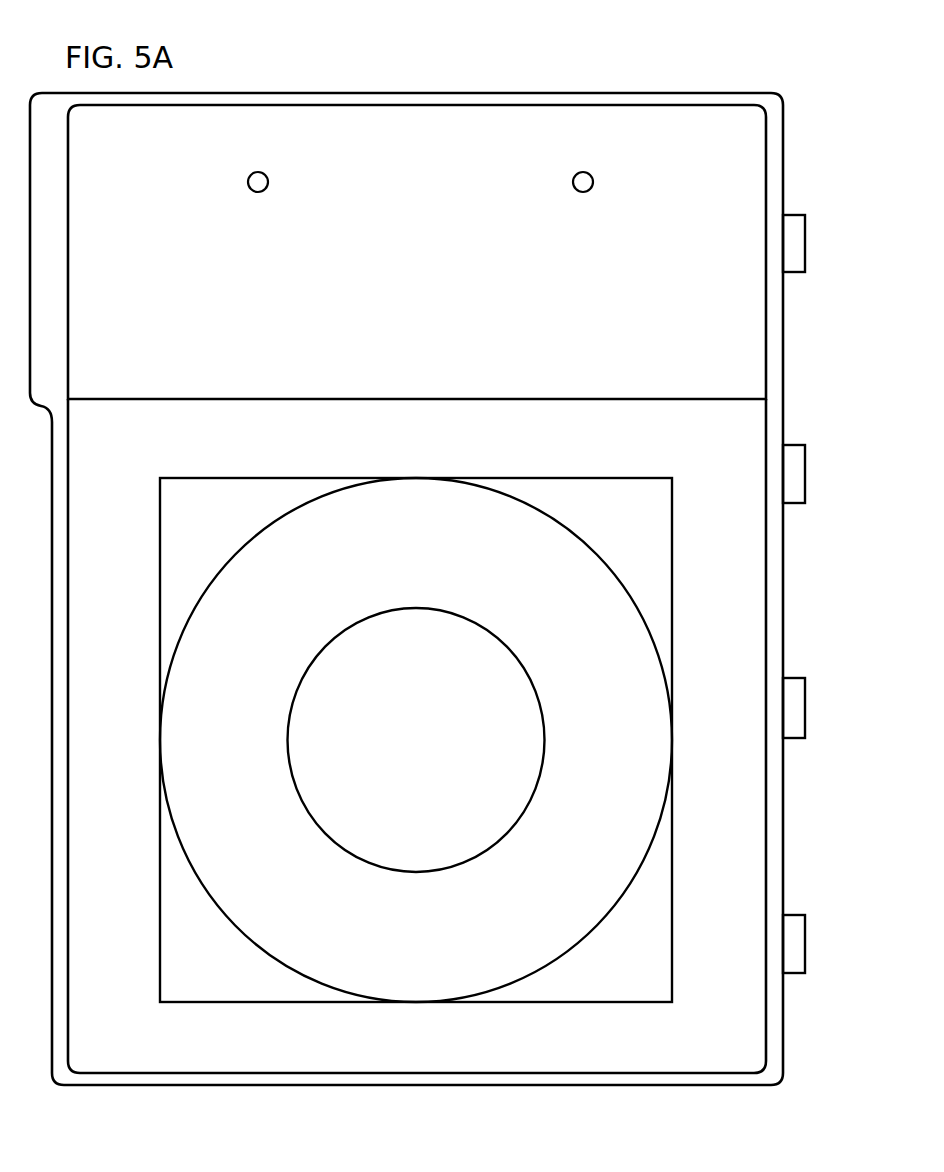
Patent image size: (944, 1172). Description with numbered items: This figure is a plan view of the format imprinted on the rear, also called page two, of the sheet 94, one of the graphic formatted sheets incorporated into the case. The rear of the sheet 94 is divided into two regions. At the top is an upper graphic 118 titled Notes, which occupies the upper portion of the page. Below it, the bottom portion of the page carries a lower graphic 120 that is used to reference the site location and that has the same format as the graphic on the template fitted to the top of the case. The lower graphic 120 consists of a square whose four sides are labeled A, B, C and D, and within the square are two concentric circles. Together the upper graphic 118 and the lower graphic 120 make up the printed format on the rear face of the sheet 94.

The sheet 94 is at (542, 92).
The upper graphic 118 is at (767, 142).
The lower graphic 120 is at (765, 428).